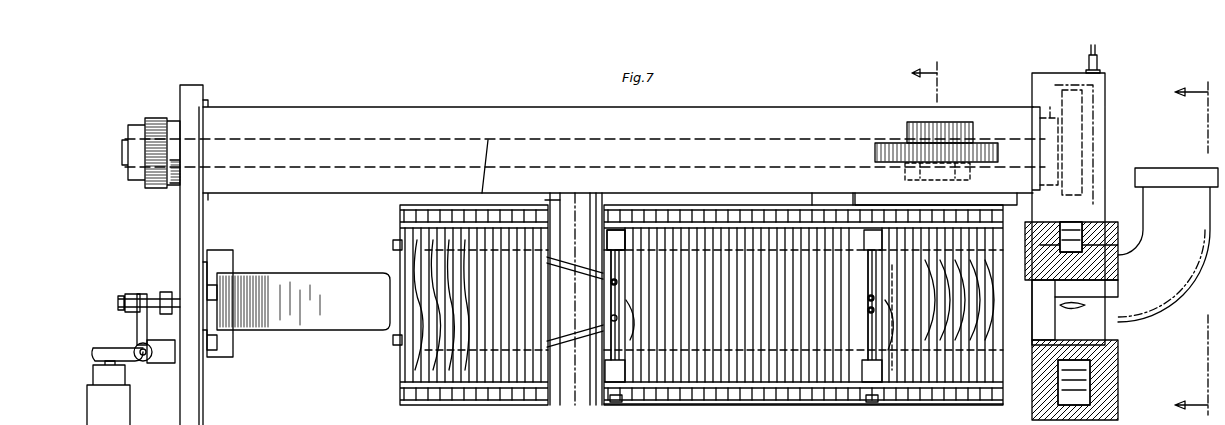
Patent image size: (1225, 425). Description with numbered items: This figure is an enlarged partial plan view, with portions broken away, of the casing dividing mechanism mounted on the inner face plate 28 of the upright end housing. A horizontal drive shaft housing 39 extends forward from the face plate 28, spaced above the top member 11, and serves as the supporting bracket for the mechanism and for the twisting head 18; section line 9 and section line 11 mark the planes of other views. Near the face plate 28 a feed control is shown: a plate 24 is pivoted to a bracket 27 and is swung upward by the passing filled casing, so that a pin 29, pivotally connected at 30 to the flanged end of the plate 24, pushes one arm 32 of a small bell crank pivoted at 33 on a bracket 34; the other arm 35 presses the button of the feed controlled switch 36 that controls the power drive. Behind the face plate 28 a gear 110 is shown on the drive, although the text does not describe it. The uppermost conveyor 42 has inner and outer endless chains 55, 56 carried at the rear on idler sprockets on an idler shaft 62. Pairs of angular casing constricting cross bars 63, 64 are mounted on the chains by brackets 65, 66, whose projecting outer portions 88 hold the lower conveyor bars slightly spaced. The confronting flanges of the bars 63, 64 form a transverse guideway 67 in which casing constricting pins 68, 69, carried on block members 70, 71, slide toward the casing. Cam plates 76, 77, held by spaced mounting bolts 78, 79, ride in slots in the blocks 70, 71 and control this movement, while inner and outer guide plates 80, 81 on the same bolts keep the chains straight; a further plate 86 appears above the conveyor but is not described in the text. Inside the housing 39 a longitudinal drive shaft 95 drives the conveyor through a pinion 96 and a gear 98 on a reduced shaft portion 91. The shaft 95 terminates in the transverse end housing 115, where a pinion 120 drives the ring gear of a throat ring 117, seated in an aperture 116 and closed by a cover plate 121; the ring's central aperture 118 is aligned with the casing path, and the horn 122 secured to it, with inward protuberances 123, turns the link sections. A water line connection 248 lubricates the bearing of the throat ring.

The section line 9- 9 is at (935, 83).
The table-like top member 11 is at (1195, 244).
The twisting head 18 is at (1142, 341).
The plate 24 is at (270, 273).
The bracket 27 is at (222, 248).
The inner face plate 28 is at (191, 255).
The pin 29 is at (150, 294).
The pivotal connection 30 is at (236, 255).
The bell crank arm 32 is at (137, 320).
The bell crank pivot 33 is at (147, 346).
The bracket 34 is at (168, 362).
The bell crank arm 35 is at (93, 348).
The feed controlled switch 36 is at (87, 408).
The drive shaft housing 39 is at (541, 107).
The uppermost conveyor 42 is at (404, 407).
The inner endless chain 55 is at (748, 260).
The outer endless chain 56 is at (718, 400).
The idler shaft 62 is at (479, 154).
The casing constricting cross bar 63 is at (612, 360).
The casing constricting cross bar 64 is at (628, 375).
The bracket 65 is at (616, 230).
The bracket 66 is at (616, 372).
The transverse guideway 67 is at (620, 262).
The casing constricting pin 68 is at (393, 266).
The casing constricting pin 69 is at (393, 348).
The block member 70 is at (620, 270).
The block member 71 is at (632, 340).
The cam plate 76 is at (960, 280).
The cam plate 77 is at (975, 310).
The mounting bolt 78 is at (836, 205).
The mounting bolt 79 is at (575, 193).
The inner guide plate 80 is at (548, 196).
The outer guide plate 81 is at (770, 400).
The upper plate 86 is at (778, 228).
The projecting outer portion 88 is at (585, 210).
The reduced shaft portion 91 is at (955, 187).
The drive shaft 95 is at (792, 140).
The pinion 96 is at (940, 130).
The gear 98 is at (885, 143).
The drive gear 110 is at (155, 118).
The end housing 115 is at (1090, 128).
The aperture 116 is at (1032, 400).
The throat ring 117 is at (1032, 222).
The central aperture 118 is at (1040, 325).
The pinion 120 is at (1080, 104).
The cover plate 121 is at (1098, 90).
The distributing horn 122 is at (1160, 306).
The protuberance 123 is at (1098, 283).
The water line connection 248 is at (1098, 52).